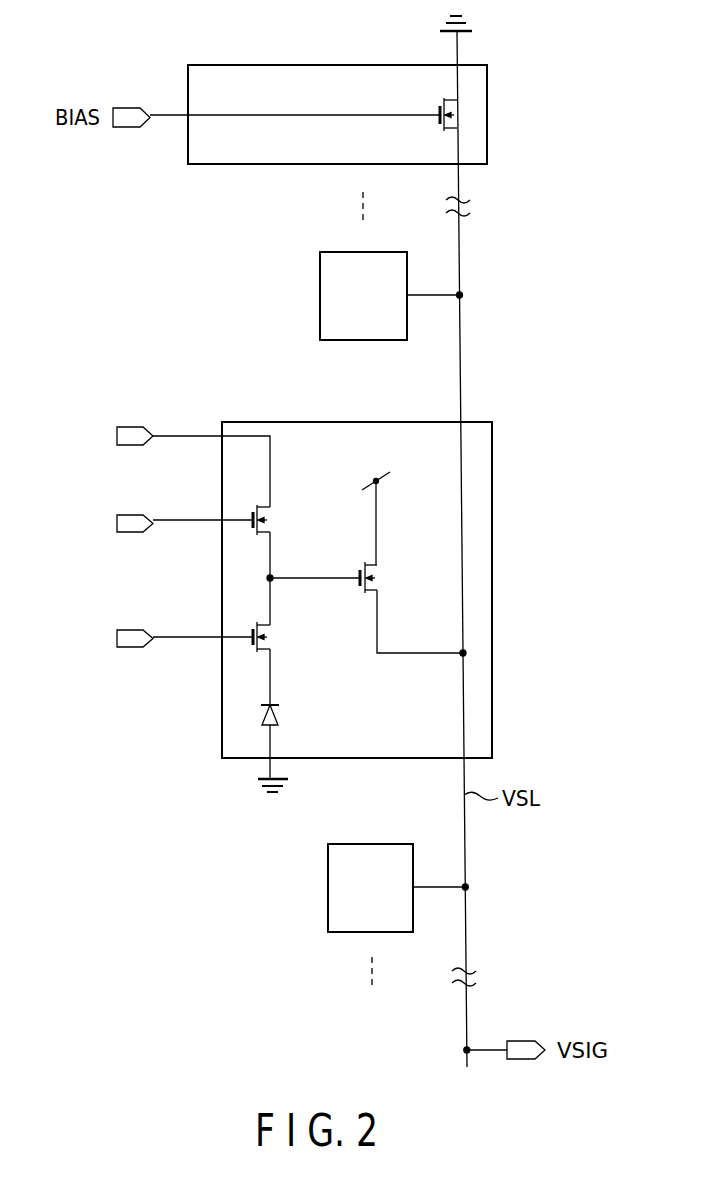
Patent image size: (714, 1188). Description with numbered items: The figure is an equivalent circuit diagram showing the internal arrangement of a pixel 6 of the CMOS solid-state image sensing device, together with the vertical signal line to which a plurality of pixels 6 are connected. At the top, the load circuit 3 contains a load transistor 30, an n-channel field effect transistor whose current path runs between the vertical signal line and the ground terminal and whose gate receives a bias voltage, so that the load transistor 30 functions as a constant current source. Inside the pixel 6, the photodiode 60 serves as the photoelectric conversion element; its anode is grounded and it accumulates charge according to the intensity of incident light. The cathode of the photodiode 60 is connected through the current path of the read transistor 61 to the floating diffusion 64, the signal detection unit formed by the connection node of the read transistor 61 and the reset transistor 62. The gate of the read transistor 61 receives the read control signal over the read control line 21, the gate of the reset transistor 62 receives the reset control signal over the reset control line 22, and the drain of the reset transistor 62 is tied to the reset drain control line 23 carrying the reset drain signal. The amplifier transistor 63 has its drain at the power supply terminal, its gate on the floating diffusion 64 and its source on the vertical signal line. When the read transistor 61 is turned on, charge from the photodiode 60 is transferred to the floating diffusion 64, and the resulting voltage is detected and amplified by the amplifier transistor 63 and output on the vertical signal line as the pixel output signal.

The load circuit 3 is at (487, 134).
The load transistor 30 is at (469, 100).
The pixel 6 is at (320, 295).
The read control line 21 is at (134, 648).
The reset control line 22 is at (134, 514).
The reset drain control line 23 is at (134, 426).
The photodiode 60 is at (261, 727).
The read transistor 61 is at (240, 618).
The reset transistor 62 is at (240, 496).
The amplifier transistor 63 is at (361, 551).
The floating diffusion 64 is at (267, 578).